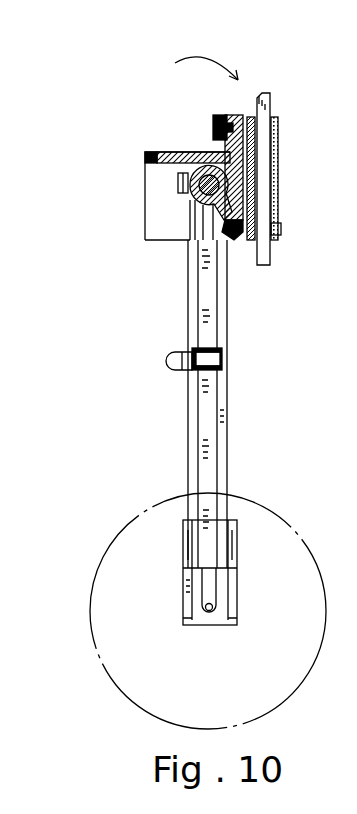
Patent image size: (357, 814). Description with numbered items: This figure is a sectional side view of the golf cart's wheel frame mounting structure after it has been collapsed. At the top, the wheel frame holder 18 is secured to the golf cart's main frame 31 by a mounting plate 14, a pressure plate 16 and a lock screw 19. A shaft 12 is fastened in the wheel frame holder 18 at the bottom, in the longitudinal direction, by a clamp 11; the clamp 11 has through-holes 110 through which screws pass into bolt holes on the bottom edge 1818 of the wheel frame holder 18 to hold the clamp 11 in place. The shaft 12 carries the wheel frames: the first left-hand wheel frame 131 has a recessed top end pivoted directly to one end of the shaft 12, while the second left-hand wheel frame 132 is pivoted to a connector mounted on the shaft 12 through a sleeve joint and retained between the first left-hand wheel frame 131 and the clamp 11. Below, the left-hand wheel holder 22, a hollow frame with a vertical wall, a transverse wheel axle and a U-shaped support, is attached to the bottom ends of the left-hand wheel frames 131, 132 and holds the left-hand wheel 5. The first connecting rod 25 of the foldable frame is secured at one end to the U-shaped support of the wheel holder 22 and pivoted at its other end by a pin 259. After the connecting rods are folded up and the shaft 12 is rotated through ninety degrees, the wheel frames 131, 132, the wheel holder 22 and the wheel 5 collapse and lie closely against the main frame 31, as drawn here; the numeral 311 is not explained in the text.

The left-hand wheel 5 is at (88, 617).
The clamp 11 is at (190, 178).
The shaft 12 is at (190, 193).
The mounting plate 14 is at (278, 164).
The pressure plate 16 is at (278, 231).
The wheel frame holder 18 is at (198, 148).
The lock screw 19 is at (212, 127).
The left-hand wheel holder 22 is at (182, 542).
The first connecting rod 25 is at (173, 386).
The main frame 31 is at (270, 97).
The through-holes 110 is at (245, 212).
The first left-hand wheel frame 131 is at (192, 265).
The second left-hand wheel frame 132 is at (205, 300).
The pin 259 is at (222, 362).
The bar end 311 is at (258, 94).
The bottom edge 1818 is at (231, 237).